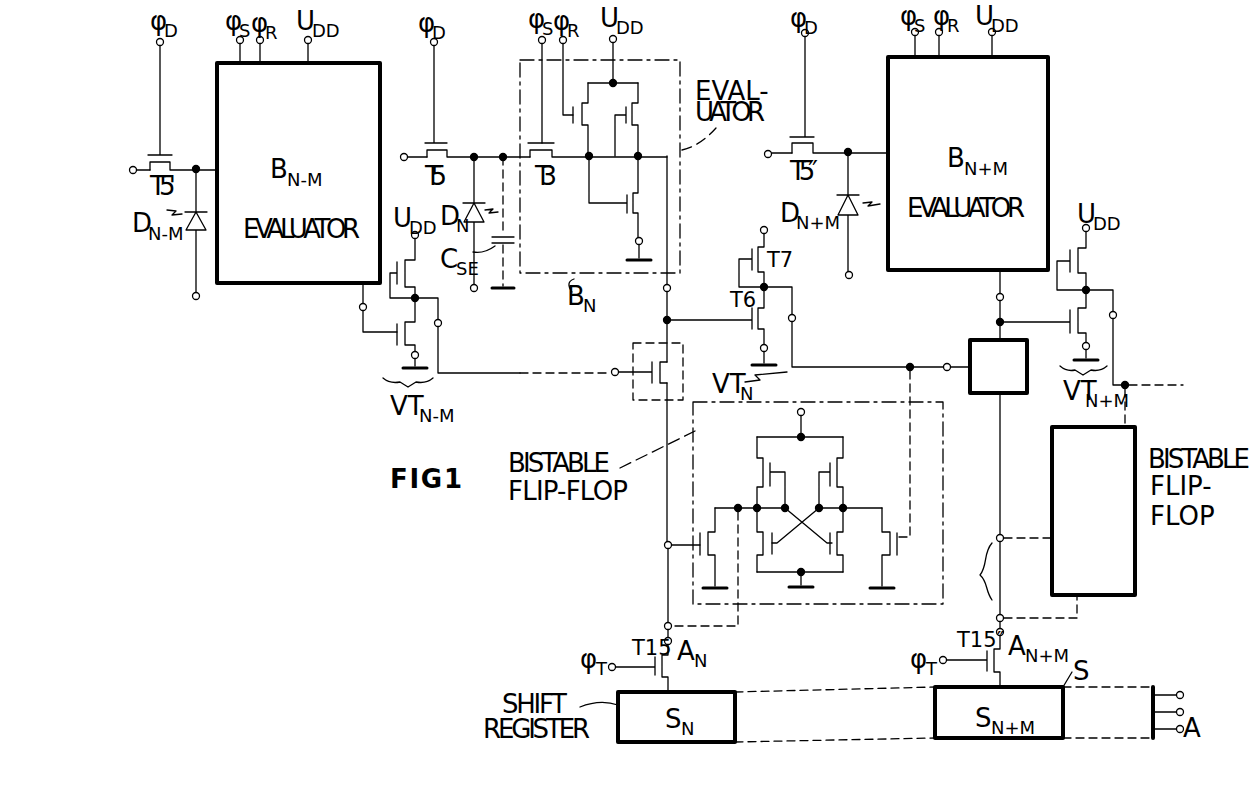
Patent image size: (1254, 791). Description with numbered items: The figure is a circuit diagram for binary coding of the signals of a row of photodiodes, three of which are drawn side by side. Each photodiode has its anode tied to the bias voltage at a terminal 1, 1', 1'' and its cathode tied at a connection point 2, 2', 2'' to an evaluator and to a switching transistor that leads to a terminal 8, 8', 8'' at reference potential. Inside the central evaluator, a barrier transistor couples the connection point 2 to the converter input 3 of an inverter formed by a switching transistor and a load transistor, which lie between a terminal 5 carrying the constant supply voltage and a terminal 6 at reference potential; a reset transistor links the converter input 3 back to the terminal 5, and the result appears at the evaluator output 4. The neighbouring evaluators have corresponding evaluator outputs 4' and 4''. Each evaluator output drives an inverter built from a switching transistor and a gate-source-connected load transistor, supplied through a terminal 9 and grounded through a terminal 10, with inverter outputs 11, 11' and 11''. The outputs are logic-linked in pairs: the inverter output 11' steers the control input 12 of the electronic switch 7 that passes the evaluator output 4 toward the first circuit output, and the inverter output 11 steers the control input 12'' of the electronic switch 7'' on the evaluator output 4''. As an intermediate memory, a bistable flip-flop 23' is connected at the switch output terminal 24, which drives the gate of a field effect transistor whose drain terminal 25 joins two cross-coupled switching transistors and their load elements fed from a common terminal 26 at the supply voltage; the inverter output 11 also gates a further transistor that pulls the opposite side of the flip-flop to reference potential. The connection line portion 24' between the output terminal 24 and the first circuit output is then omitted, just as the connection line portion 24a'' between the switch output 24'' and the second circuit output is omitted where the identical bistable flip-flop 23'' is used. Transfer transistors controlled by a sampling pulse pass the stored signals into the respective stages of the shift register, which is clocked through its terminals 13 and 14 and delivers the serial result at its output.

The terminal 1 is at (488, 311).
The terminal 1' is at (215, 315).
The terminal 1'' is at (871, 297).
The connection point 2 is at (475, 143).
The connection point 2' is at (200, 154).
The connection point 2'' is at (851, 137).
The converter input 3 is at (584, 172).
The evaluator output 4 is at (660, 259).
The evaluator output 4' is at (368, 307).
The evaluator output 4'' is at (985, 305).
The terminal 5 is at (617, 44).
The terminal 6 is at (636, 243).
The electronic switch 7 is at (644, 388).
The electronic switch 7'' is at (998, 366).
The terminal 8 is at (414, 173).
The terminal 8' is at (139, 184).
The terminal 8'' is at (776, 170).
The terminal 9 is at (734, 223).
The terminal 10 is at (777, 347).
The inverter output 11 is at (853, 327).
The inverter output 11' is at (467, 335).
The inverter output 11'' is at (1123, 337).
The control input 12 is at (622, 358).
The control input 12'' is at (959, 353).
The shift register terminal 13 is at (1177, 694).
The shift register terminal 14 is at (1184, 710).
The bistable flip-flop 23' is at (807, 519).
The bistable flip-flop 23'' is at (1099, 511).
The output terminal of electronic switch 24 is at (670, 534).
The connection line portion 24' is at (644, 593).
The output of electronic switch 24'' is at (1009, 528).
The connection line portion 24a'' is at (973, 571).
The drain terminal 25 is at (743, 494).
The common terminal 26 is at (819, 420).